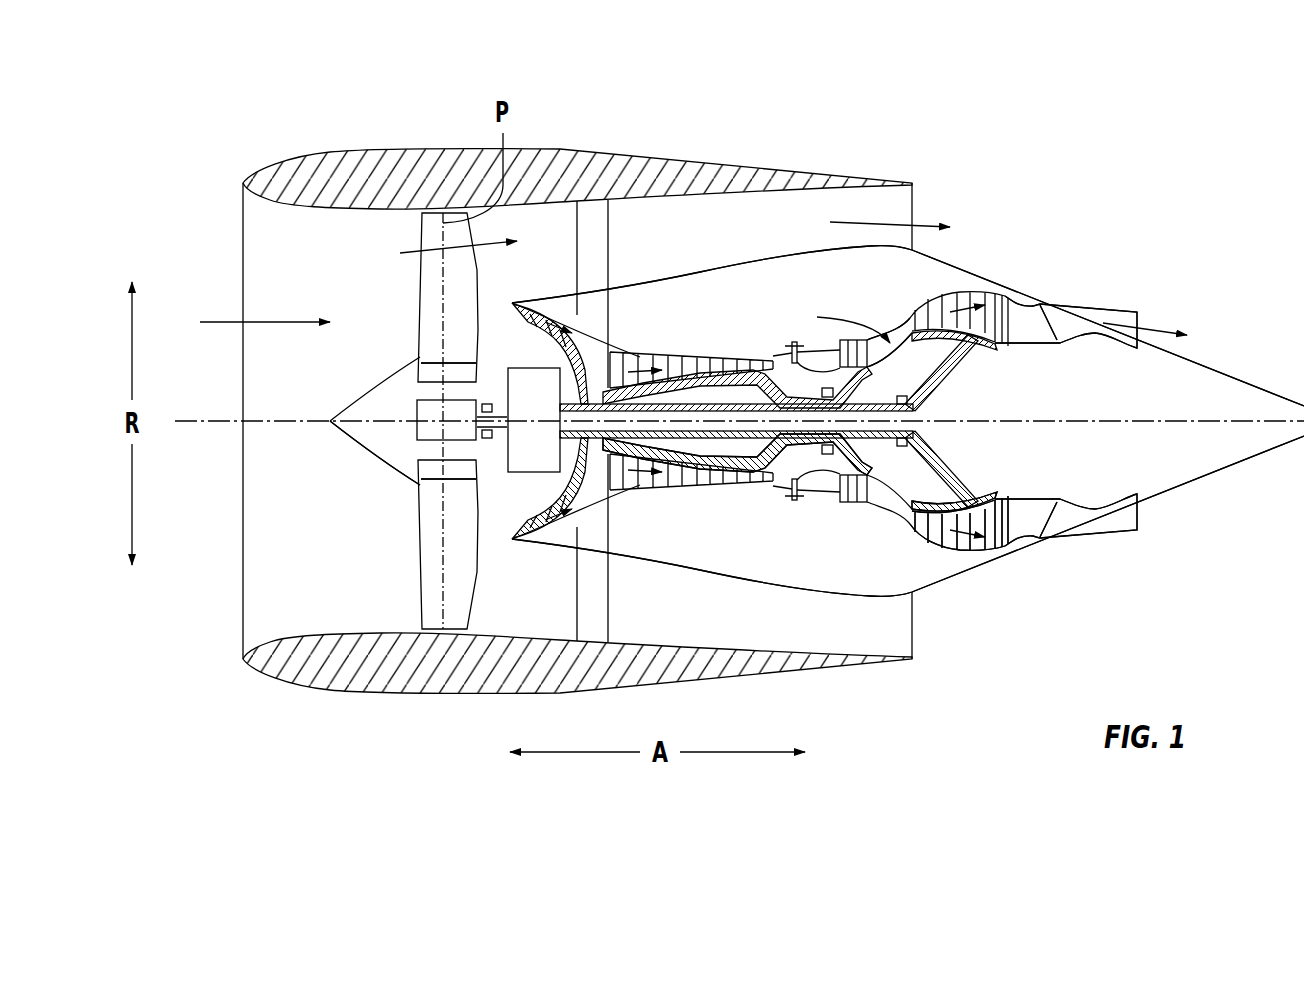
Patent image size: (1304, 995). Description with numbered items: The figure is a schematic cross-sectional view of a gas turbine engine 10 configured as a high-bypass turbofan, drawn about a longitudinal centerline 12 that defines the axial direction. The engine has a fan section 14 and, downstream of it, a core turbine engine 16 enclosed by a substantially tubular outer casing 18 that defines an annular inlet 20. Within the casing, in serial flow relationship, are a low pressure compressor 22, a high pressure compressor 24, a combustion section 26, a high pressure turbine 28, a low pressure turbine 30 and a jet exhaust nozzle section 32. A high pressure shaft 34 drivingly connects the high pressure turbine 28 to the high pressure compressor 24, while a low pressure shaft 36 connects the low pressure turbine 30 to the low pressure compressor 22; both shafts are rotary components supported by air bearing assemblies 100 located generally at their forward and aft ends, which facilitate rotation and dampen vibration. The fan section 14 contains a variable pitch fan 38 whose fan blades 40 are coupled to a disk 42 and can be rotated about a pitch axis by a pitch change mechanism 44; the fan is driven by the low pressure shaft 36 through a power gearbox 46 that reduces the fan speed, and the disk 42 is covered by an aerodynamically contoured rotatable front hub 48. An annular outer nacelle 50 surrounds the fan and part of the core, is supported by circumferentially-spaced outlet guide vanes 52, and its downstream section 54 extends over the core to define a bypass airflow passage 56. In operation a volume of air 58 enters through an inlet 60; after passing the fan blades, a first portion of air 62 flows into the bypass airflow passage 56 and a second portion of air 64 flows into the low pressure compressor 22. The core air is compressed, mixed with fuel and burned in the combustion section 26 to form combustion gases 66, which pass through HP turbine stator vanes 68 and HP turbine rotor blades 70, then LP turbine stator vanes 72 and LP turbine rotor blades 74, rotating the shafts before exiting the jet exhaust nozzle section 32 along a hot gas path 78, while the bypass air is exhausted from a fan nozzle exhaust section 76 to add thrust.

The gas turbine engine 10 is at (1053, 170).
The longitudinal centerline 12 is at (1080, 420).
The fan section 14 is at (380, 240).
The core turbine engine 16 is at (730, 307).
The outer casing 18 is at (773, 588).
The annular inlet 20 is at (515, 525).
The low pressure compressor 22 is at (557, 480).
The high pressure compressor 24 is at (640, 480).
The combustion section 26 is at (812, 483).
The high pressure turbine 28 is at (900, 495).
The low pressure turbine 30 is at (997, 550).
The jet exhaust nozzle section 32 is at (1057, 532).
The high pressure shaft 34 is at (843, 392).
The low pressure shaft 36 is at (945, 392).
The variable pitch fan 38 is at (387, 472).
The fan blades 40 is at (417, 573).
The disk 42 is at (437, 375).
The pitch change mechanism 44 is at (417, 403).
The power gearbox 46 is at (547, 387).
The rotatable front hub 48 is at (340, 437).
The outer nacelle 50 is at (470, 697).
The outlet guide vanes 52 is at (610, 230).
The downstream section 54 is at (853, 178).
The bypass airflow passage 56 is at (787, 236).
The volume of air 58 is at (262, 320).
The inlet 60 is at (243, 632).
The first portion of air 62 is at (435, 277).
The second portion of air 64 is at (503, 310).
The combustion gases 66 is at (980, 238).
The HP turbine stator vanes 68 is at (827, 482).
The HP turbine rotor blades 70 is at (847, 473).
The LP turbine stator vanes 72 is at (920, 533).
The LP turbine rotor blades 74 is at (930, 537).
The fan nozzle exhaust section 76 is at (900, 208).
The hot gas path 78 is at (895, 325).
The air bearing assemblies 100 is at (487, 400).